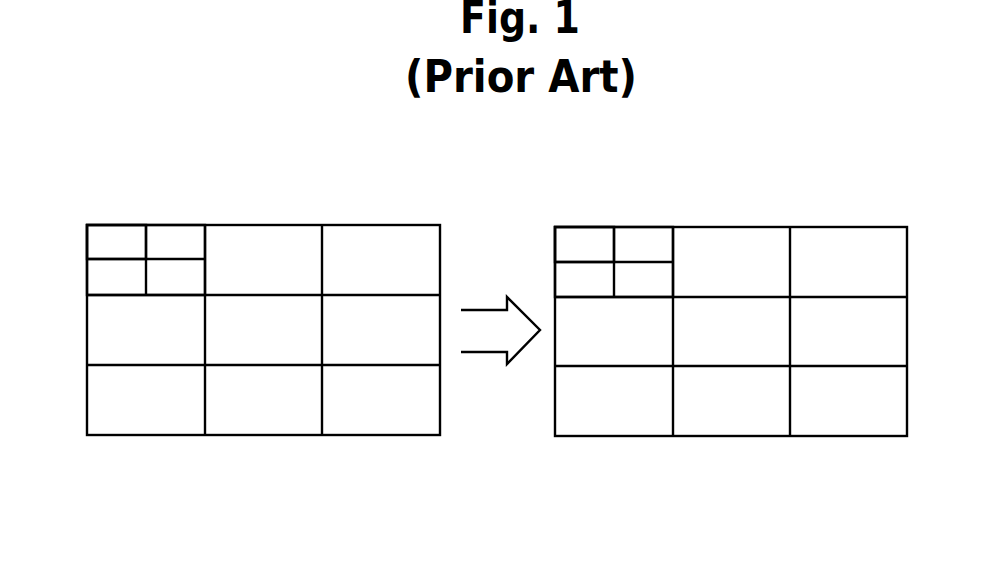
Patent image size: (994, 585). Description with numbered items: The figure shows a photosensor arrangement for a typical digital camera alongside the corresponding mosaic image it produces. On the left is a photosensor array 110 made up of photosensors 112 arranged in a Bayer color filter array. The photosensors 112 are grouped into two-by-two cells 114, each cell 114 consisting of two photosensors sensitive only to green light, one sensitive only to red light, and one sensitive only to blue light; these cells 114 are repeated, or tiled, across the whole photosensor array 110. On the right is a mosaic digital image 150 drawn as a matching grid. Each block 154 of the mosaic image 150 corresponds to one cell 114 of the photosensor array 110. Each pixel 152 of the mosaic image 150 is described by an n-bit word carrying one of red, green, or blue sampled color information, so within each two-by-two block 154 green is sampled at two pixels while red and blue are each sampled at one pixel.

The photosensor array 110 is at (374, 184).
The photosensor 112 is at (102, 233).
The cell 114 is at (103, 202).
The mosaic digital image 150 is at (780, 186).
The pixel 152 is at (584, 244).
The block 154 is at (571, 203).